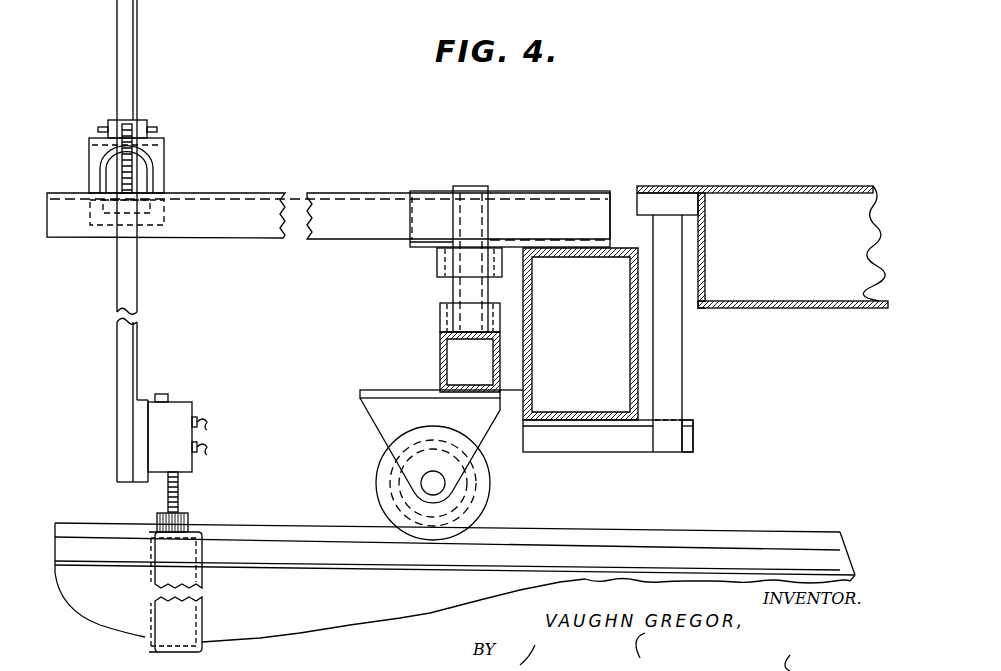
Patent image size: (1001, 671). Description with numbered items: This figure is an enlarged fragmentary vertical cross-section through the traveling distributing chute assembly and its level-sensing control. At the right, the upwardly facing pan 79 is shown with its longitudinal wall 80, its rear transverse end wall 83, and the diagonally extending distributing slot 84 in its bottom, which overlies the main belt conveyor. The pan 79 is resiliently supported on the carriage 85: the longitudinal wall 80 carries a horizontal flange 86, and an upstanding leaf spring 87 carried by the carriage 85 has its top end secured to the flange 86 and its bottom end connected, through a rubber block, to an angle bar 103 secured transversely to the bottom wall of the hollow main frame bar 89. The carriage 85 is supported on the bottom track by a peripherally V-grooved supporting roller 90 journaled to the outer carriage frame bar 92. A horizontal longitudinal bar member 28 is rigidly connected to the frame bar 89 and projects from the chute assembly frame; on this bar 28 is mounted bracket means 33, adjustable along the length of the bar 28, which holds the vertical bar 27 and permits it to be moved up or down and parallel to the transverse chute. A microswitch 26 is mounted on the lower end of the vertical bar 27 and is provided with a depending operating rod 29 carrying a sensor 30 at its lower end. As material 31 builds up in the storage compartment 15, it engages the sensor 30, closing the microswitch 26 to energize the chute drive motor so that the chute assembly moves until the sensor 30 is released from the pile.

The main storage compartment 15 is at (86, 598).
The microswitch 26 is at (177, 408).
The vertical bar 27 is at (134, 291).
The longitudinal bar member 28 is at (262, 205).
The operating rod 29 is at (180, 490).
The sensor 30 is at (204, 605).
The material 31 is at (316, 603).
The bracket means 33 is at (163, 140).
The pan 79 is at (700, 312).
The longitudinal wall 80 is at (706, 251).
The rear transverse end wall 83 is at (748, 190).
The distributing slot 84 is at (848, 301).
The carriage 85 is at (695, 452).
The horizontal flange 86 is at (651, 186).
The leaf spring 87 is at (674, 381).
The hollow frame bar 89 is at (532, 334).
The supporting roller 90 is at (377, 479).
The outer carriage frame bar 92 is at (440, 361).
The angle bar 103 is at (588, 440).